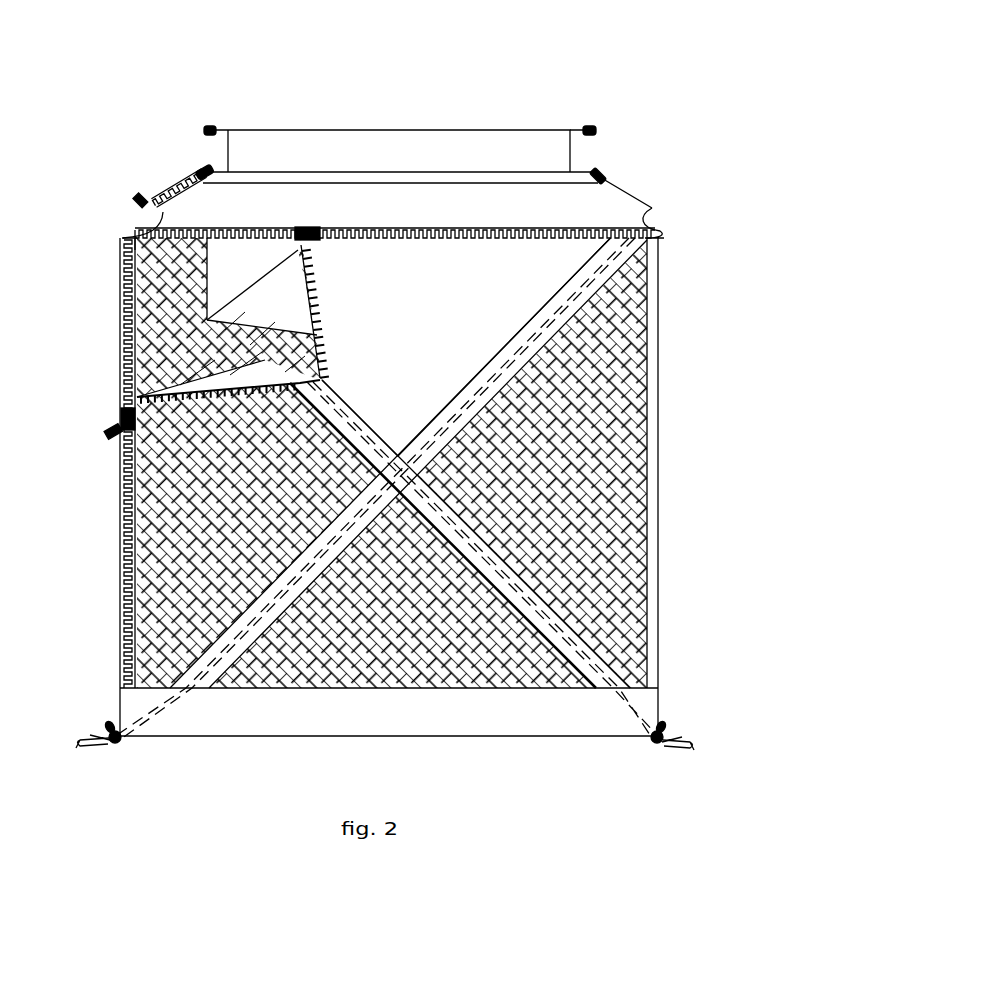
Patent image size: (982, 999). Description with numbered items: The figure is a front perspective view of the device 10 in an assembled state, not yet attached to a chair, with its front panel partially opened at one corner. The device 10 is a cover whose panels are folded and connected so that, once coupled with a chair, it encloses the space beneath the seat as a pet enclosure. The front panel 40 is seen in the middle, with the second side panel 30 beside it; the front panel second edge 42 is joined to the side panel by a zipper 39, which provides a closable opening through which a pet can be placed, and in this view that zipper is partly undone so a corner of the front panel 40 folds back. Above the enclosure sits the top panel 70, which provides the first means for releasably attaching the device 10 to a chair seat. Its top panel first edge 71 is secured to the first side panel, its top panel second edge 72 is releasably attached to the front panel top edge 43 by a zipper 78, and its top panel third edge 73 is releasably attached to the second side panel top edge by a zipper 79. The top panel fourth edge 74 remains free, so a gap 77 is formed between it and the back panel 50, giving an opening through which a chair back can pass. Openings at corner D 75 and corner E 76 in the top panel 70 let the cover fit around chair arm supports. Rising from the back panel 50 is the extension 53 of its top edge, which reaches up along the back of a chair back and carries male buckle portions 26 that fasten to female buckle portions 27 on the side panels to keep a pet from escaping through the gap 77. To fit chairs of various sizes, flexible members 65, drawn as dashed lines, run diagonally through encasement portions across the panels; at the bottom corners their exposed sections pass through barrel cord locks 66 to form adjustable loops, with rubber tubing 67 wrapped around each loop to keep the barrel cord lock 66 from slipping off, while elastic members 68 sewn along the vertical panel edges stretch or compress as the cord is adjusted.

The device 10 is at (732, 99).
The male buckle portion 26 is at (210, 127).
The female buckle portion 27 is at (199, 169).
The second side panel 30 is at (162, 294).
The zipper 39 is at (113, 427).
The front panel 40 is at (384, 344).
The front panel second edge 42 is at (140, 384).
The front panel top edge 43 is at (207, 321).
The back panel 50 is at (231, 274).
The extension 53 is at (384, 159).
The flexible member 65 is at (200, 663).
The barrel cord lock 66 is at (110, 729).
The rubber tubing 67 is at (74, 743).
The elastic member 68 is at (143, 553).
The top panel 70 is at (381, 214).
The top panel first edge 71 is at (618, 188).
The top panel second edge 72 is at (155, 237).
The top panel third edge 73 is at (184, 191).
The top panel fourth edge 74 is at (481, 185).
The corner D opening 75 is at (655, 222).
The corner E opening 76 is at (137, 225).
The gap 77 is at (444, 180).
The zipper 78 is at (315, 228).
The zipper 79 is at (136, 197).